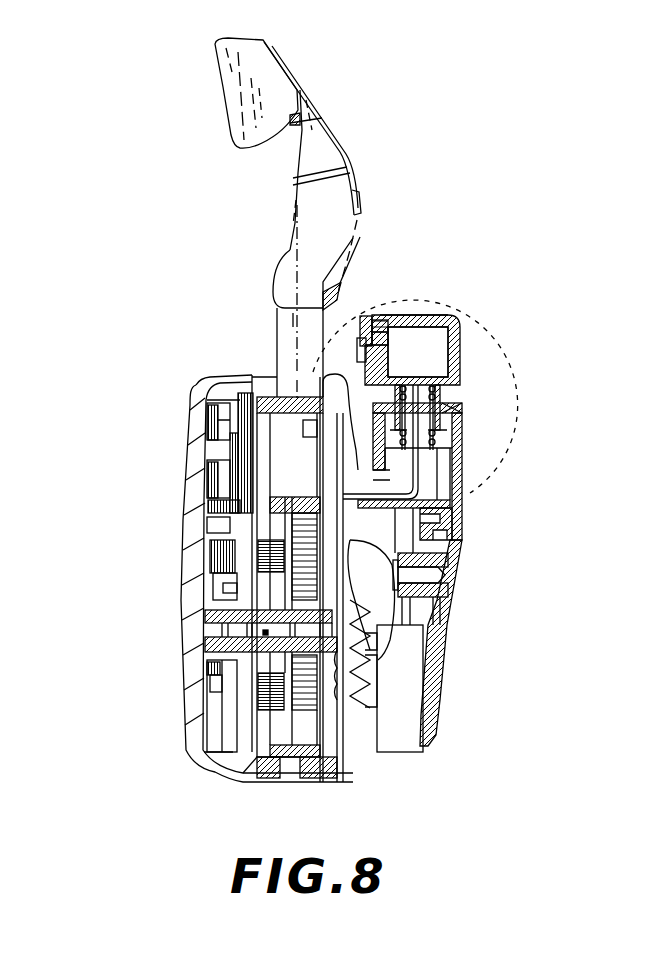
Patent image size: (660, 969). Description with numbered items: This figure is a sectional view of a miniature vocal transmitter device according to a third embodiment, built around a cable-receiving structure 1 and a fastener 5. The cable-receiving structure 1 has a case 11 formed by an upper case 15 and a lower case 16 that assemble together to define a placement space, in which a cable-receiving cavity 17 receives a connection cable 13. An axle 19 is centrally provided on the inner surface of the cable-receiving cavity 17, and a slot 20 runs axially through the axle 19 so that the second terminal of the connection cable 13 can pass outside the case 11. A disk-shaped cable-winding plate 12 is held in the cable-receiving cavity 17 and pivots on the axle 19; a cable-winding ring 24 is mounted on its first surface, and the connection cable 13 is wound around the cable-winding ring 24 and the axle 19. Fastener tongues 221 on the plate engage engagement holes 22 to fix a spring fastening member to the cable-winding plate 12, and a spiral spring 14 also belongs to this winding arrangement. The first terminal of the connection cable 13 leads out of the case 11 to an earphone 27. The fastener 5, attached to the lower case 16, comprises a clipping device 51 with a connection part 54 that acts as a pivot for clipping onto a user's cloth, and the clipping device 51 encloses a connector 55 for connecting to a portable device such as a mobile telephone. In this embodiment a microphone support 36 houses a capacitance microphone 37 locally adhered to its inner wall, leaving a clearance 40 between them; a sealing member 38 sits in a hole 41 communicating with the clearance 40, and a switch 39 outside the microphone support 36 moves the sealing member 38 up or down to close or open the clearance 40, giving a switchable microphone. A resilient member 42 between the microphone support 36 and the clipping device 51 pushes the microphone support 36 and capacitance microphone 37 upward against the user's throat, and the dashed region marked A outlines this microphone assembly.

The cable-receiving structure 1 is at (253, 568).
The fastener 5 is at (414, 486).
The case 11 is at (184, 751).
The cable-winding plate 12 is at (272, 707).
The connection cable 13 is at (297, 730).
The spiral spring 14 is at (260, 743).
The upper case 15 is at (197, 600).
The lower case 16 is at (340, 742).
The cable-receiving cavity 17 is at (217, 713).
The axle 19 is at (230, 625).
The slot 20 is at (220, 635).
The engagement holes 22 is at (270, 465).
The cable-winding ring 24 is at (340, 747).
The earphone 27 is at (335, 205).
The microphone support 36 is at (450, 320).
The capacitance microphone 37 is at (440, 345).
The sealing member 38 is at (375, 318).
The switch 39 is at (367, 348).
The clearance 40 is at (400, 315).
The hole 41 is at (363, 318).
The resilient member 42 is at (460, 418).
The clipping device 51 is at (456, 633).
The connection part 54 is at (440, 573).
The connector 55 is at (407, 730).
The fastener tongues 221 is at (240, 500).
The detail region A is at (523, 420).